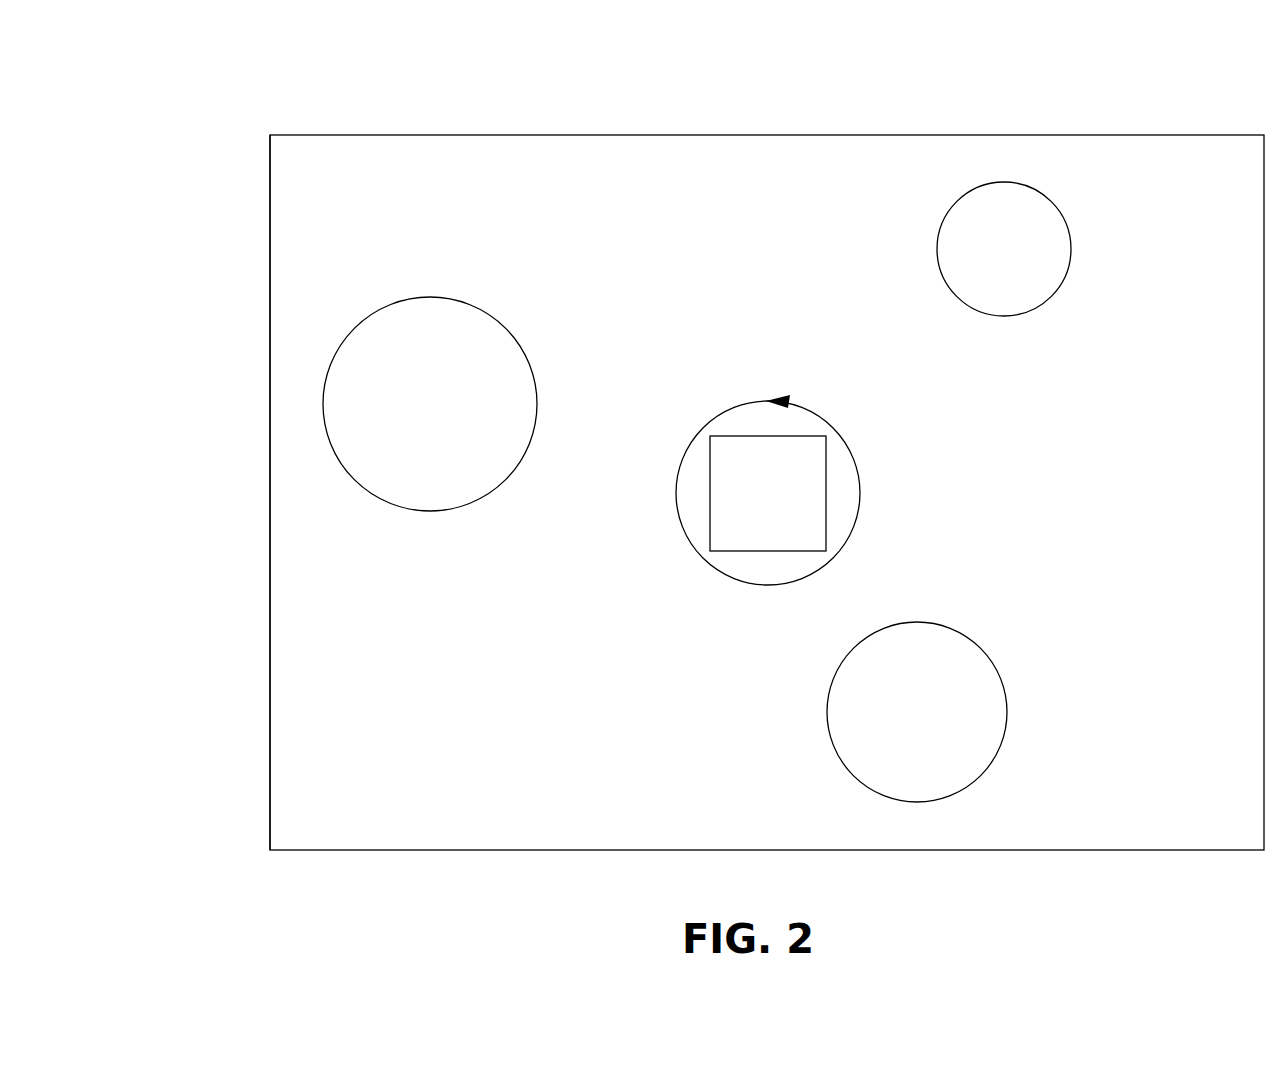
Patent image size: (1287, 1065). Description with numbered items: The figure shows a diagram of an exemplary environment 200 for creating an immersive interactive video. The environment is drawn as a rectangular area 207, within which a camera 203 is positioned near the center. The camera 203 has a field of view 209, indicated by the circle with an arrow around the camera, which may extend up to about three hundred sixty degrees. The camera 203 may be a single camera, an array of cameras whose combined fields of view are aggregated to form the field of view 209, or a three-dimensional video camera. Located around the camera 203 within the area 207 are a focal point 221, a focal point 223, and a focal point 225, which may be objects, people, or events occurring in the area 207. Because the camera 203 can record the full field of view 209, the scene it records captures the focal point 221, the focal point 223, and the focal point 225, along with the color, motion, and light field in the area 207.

The environment 200 is at (200, 83).
The camera 203 is at (768, 493).
The area 207 is at (269, 462).
The field of view 209 is at (696, 555).
The focal point 221 is at (430, 404).
The focal point 223 is at (1004, 249).
The focal point 225 is at (917, 712).